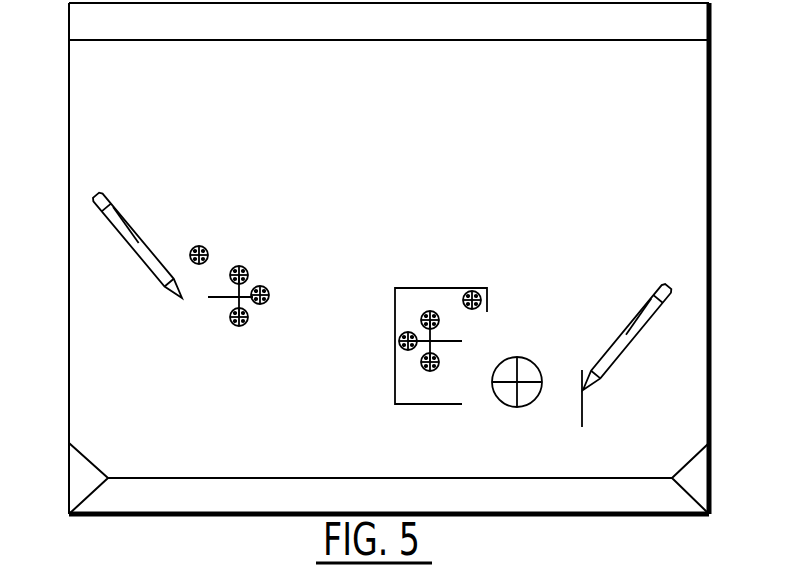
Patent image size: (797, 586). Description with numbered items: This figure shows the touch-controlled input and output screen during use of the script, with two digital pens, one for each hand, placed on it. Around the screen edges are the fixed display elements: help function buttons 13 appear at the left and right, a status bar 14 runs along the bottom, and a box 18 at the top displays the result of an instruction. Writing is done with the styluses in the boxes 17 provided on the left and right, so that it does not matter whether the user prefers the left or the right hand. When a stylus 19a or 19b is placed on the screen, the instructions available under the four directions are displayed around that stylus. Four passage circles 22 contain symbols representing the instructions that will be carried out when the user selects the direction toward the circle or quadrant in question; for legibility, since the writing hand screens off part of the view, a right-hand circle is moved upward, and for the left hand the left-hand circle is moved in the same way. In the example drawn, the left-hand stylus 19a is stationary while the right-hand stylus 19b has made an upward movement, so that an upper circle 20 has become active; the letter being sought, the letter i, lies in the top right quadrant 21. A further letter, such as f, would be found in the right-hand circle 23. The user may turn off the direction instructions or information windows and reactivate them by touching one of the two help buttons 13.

The help function buttons 13 is at (80, 492).
The status bar 14 is at (558, 506).
The writing boxes 17 is at (690, 206).
The result display box 18 is at (692, 30).
The left-hand stylus 19a is at (108, 210).
The right-hand stylus 19b is at (647, 300).
The upper circle 20 is at (438, 322).
The top right quadrant 21 is at (528, 372).
The passage circles 22 is at (400, 377).
The right-hand circle 23 is at (465, 292).